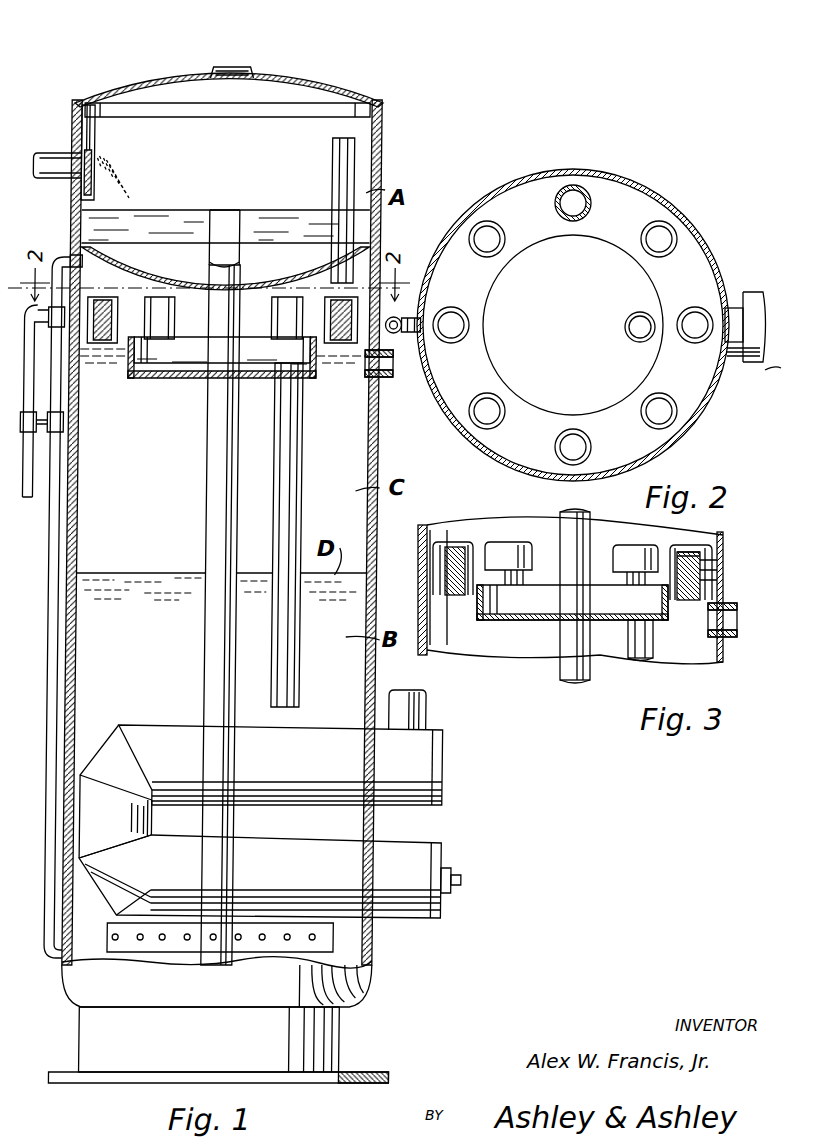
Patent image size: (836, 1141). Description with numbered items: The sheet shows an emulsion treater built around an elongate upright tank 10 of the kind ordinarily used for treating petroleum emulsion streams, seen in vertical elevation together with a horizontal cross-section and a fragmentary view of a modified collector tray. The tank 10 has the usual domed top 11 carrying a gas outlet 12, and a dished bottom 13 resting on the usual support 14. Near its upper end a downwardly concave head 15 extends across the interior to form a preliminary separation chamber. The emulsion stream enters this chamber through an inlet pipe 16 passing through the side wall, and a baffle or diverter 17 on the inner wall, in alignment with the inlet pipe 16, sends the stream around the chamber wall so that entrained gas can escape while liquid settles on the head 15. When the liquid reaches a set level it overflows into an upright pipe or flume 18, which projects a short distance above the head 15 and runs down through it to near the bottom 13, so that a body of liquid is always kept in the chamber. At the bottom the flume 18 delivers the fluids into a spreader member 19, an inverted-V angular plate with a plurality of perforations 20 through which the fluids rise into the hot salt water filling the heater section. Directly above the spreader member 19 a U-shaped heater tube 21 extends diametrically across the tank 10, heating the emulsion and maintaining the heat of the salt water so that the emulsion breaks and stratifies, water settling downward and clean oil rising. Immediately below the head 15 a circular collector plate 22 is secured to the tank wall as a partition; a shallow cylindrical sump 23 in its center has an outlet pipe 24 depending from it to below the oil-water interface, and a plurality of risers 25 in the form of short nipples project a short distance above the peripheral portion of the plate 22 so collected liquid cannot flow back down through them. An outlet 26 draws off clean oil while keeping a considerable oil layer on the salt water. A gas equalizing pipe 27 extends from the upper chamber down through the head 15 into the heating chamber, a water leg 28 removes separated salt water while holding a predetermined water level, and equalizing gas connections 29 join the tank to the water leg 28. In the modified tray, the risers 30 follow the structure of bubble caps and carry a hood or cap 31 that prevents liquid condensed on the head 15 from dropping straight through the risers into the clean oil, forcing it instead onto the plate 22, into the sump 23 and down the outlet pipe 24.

In FIG. 1, the tank 10 is at (379, 460).
In FIG. 2, the tank 10 is at (722, 258).
In FIG. 3, the tank 10 is at (726, 654).
In FIG. 1, the domed top 11 is at (316, 96).
In FIG. 1, the gas outlet 12 is at (216, 78).
In FIG. 1, the dished bottom 13 is at (365, 1000).
In FIG. 1, the support 14 is at (340, 1045).
In FIG. 1, the downwardly concave head 15 is at (144, 279).
In FIG. 1, the inlet pipe 16 is at (42, 158).
In FIG. 1, the baffle or diverter 17 is at (78, 132).
In FIG. 1, the upright pipe or flume 18 is at (201, 457).
In FIG. 2, the upright pipe or flume 18 is at (593, 203).
In FIG. 3, the upright pipe or flume 18 is at (560, 671).
In FIG. 1, the spreader member 19 is at (333, 943).
In FIG. 1, the perforations 20 is at (265, 945).
In FIG. 1, the U-shaped heater tube 21 is at (436, 735).
In FIG. 2, the U-shaped heater tube 21 is at (768, 370).
In FIG. 1, the collector plate 22 is at (181, 340).
In FIG. 2, the collector plate 22 is at (640, 374).
In FIG. 3, the collector plate 22 is at (537, 622).
In FIG. 1, the cylindrical sump 23 is at (184, 372).
In FIG. 1, the outlet pipe 24 is at (285, 458).
In FIG. 2, the outlet pipe 24 is at (626, 328).
In FIG. 3, the outlet pipe 24 is at (628, 640).
In FIG. 1, the risers 25 is at (268, 322).
In FIG. 2, the risers 25 is at (476, 225).
In FIG. 3, the risers 25 is at (572, 571).
In FIG. 1, the outlet 26 is at (376, 378).
In FIG. 2, the outlet 26 is at (760, 285).
In FIG. 3, the outlet 26 is at (735, 603).
In FIG. 1, the gas equalizing pipe 27 is at (323, 150).
In FIG. 1, the water leg 28 is at (401, 340).
In FIG. 1, the equalizing gas connections 29 is at (60, 255).
In FIG. 3, the risers 30 is at (722, 586).
In FIG. 3, the hood or cap 31 is at (722, 562).